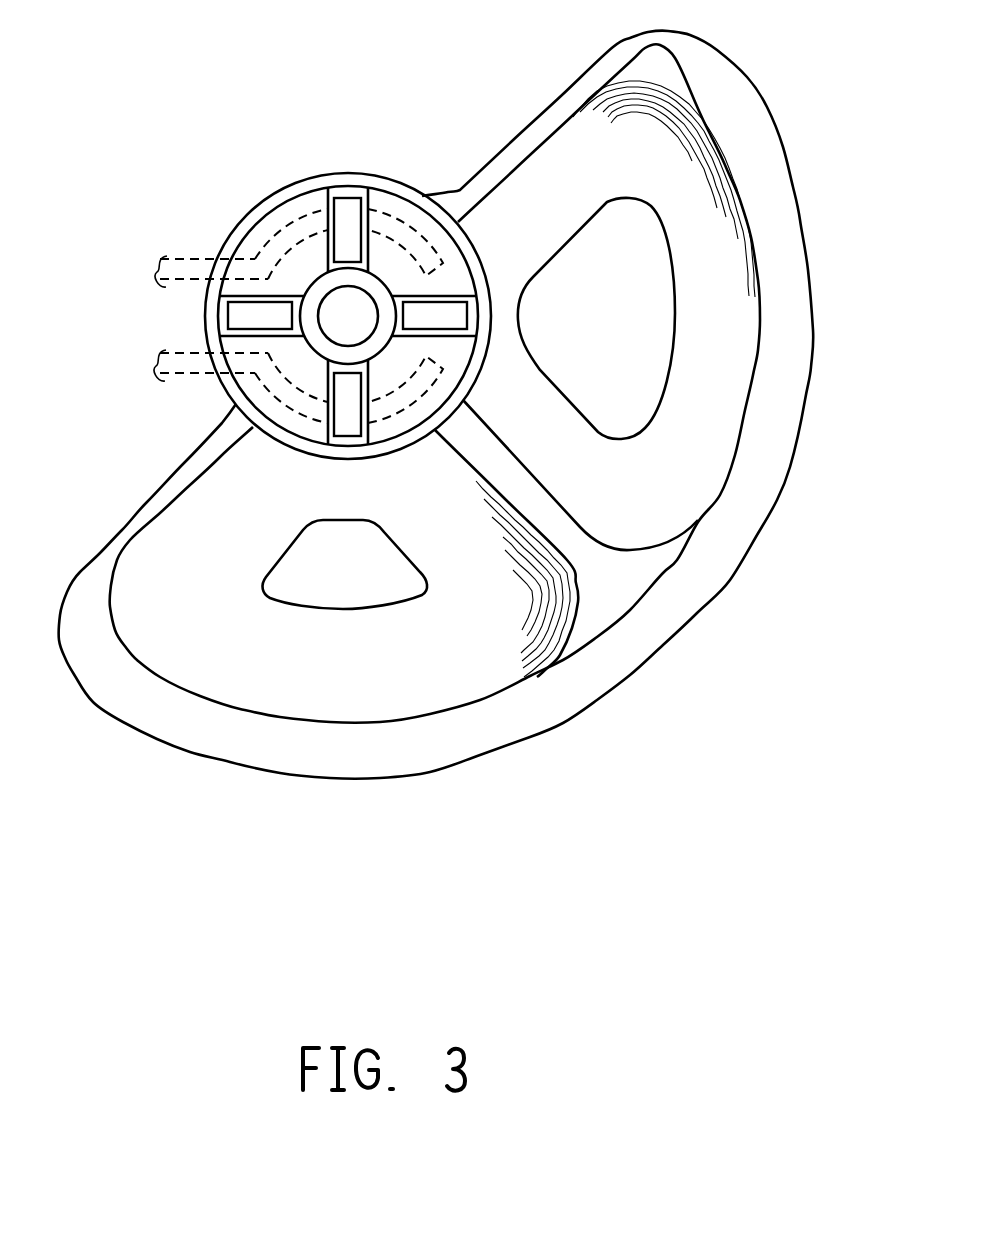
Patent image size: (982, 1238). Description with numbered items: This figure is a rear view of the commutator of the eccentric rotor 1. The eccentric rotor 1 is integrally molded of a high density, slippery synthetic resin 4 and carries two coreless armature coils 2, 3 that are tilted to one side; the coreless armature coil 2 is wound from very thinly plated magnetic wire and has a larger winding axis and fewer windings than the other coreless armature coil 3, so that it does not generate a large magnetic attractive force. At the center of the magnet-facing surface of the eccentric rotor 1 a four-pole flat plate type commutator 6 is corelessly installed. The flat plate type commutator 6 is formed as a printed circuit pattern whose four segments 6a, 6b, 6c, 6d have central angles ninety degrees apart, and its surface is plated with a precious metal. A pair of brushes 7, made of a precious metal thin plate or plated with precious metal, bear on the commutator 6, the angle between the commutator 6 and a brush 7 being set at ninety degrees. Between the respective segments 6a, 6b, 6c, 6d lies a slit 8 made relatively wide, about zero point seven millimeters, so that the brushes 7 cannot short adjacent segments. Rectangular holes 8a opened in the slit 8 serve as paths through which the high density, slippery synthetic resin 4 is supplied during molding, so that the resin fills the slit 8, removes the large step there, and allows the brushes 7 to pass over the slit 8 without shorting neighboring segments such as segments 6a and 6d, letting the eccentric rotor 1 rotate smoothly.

The eccentric rotor 1 is at (763, 78).
The coreless armature coil 2 is at (717, 368).
The coreless armature coil 3 is at (435, 700).
The high density, slippery synthetic resin 4 is at (770, 477).
The flat plate type commutator 6 is at (367, 165).
The segment 6a is at (397, 205).
The segment 6b is at (438, 402).
The segment 6c is at (247, 383).
The segment 6d is at (272, 218).
The brushes 7 is at (177, 267).
The slit 8 is at (227, 313).
The rectangular holes 8a is at (345, 212).